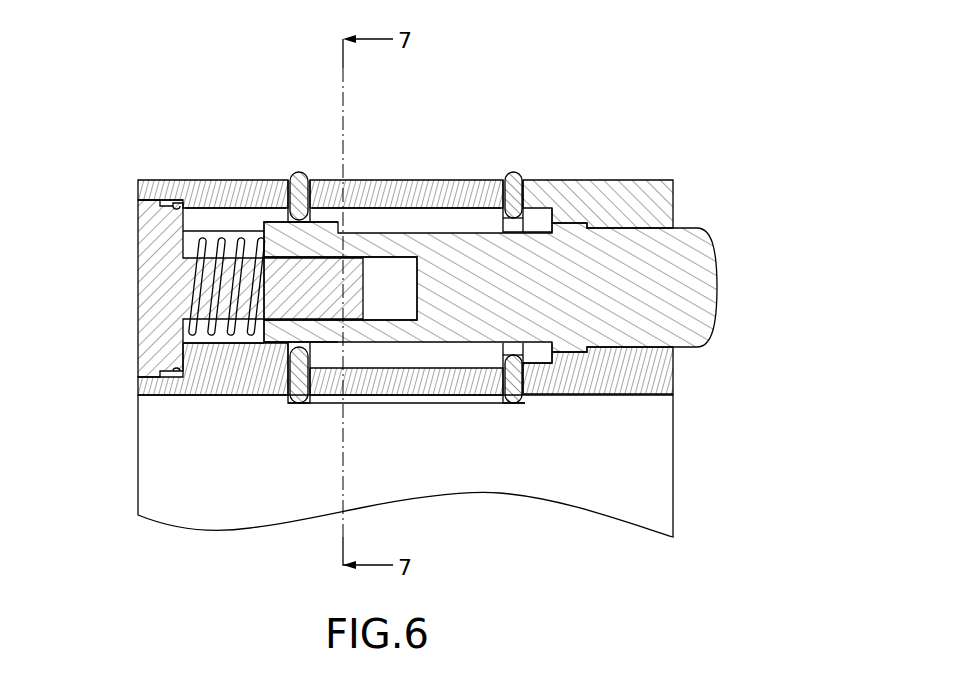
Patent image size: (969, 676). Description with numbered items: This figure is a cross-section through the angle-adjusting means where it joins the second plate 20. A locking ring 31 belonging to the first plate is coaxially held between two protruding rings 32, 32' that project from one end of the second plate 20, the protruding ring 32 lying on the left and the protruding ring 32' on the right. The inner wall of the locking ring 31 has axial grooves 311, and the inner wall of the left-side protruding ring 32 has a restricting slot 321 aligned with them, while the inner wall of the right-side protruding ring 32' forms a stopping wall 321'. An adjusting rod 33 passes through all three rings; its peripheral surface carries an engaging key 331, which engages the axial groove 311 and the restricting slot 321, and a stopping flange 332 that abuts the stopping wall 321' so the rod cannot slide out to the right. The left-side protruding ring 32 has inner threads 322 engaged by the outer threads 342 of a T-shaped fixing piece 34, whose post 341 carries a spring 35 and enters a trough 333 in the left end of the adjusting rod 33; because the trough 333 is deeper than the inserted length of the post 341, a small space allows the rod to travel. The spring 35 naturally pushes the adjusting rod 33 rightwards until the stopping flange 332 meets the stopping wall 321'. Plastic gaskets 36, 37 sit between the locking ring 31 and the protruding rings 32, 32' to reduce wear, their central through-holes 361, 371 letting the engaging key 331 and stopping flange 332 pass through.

The second plate 20 is at (647, 468).
The locking ring 31 is at (488, 190).
The axial groove 311 is at (465, 222).
The protruding ring 32 is at (405, 235).
The restricting slot 321 is at (213, 160).
The inner threads 322 is at (172, 181).
The protruding ring 32' is at (641, 179).
The stopping wall 321' is at (607, 262).
The adjusting rod 33 is at (703, 293).
The engaging key 331 is at (325, 210).
The stopping flange 332 is at (570, 356).
The trough 333 is at (381, 270).
The post 341 is at (335, 348).
The fixing piece 34 is at (157, 295).
The outer threads 342 is at (168, 204).
The spring 35 is at (212, 322).
The plastic gasket 36 is at (300, 171).
The central through-hole 361 is at (287, 216).
The plastic gasket 37 is at (512, 172).
The central through-hole 371 is at (515, 227).